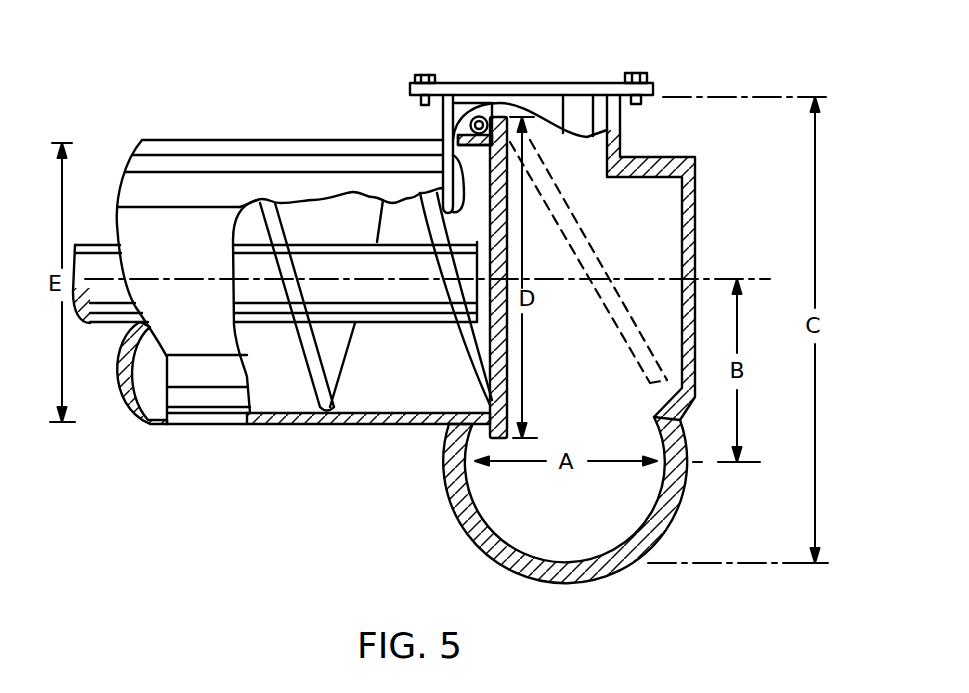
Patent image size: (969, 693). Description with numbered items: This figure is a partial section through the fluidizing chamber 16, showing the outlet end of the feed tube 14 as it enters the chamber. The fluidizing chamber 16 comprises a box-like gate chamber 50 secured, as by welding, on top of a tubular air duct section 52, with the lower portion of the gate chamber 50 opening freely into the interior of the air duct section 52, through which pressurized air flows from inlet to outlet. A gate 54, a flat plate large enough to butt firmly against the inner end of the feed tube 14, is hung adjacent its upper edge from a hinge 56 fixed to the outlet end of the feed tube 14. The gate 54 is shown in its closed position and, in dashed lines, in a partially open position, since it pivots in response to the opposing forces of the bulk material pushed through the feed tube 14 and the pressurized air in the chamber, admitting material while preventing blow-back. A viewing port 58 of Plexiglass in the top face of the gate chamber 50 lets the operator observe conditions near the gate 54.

The feed tube 14 is at (285, 135).
The fluidizing chamber 16 is at (697, 77).
The gate chamber 50 is at (697, 222).
The air duct section 52 is at (683, 506).
The gate 54 is at (440, 461).
The hinge 56 is at (467, 127).
The viewing port 58 is at (541, 83).